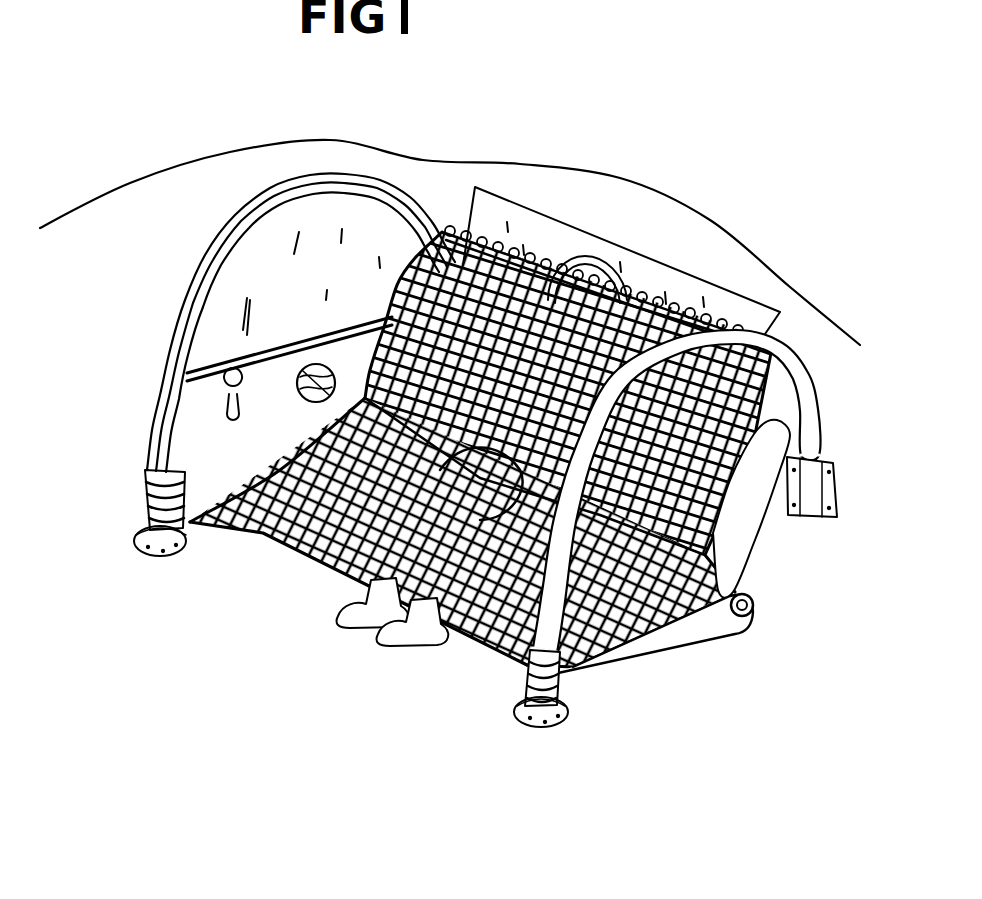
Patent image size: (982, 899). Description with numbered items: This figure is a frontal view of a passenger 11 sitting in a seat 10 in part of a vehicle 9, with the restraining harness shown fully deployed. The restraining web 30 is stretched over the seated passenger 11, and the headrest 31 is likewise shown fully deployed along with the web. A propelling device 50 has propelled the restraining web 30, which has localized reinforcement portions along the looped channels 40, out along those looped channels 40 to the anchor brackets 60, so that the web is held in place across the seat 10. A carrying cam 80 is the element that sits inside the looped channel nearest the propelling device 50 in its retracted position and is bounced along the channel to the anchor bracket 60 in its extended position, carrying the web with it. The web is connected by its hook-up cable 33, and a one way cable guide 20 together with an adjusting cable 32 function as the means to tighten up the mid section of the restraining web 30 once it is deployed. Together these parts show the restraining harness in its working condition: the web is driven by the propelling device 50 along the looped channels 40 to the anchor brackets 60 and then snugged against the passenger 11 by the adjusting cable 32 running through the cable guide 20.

The vehicle 9 is at (178, 156).
The seat 10 is at (634, 650).
The passenger 11 is at (616, 262).
The cable guide 20 is at (753, 630).
The restraining web 30 is at (490, 226).
The headrest 31 is at (767, 402).
The adjusting cable 32 is at (673, 653).
The hook-up cable 33 is at (655, 318).
The looped channel 40 is at (150, 352).
The propelling device 50 is at (808, 537).
The anchor bracket 60 is at (130, 505).
The carrying cam 80 is at (190, 537).